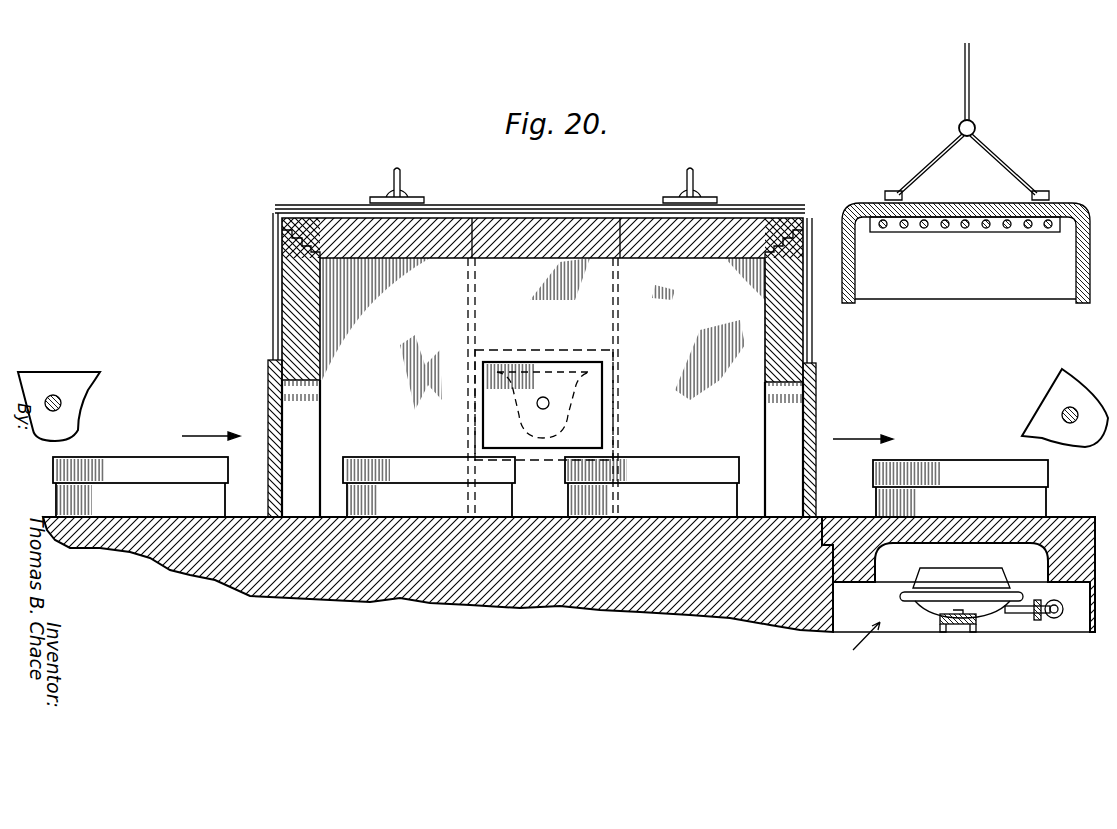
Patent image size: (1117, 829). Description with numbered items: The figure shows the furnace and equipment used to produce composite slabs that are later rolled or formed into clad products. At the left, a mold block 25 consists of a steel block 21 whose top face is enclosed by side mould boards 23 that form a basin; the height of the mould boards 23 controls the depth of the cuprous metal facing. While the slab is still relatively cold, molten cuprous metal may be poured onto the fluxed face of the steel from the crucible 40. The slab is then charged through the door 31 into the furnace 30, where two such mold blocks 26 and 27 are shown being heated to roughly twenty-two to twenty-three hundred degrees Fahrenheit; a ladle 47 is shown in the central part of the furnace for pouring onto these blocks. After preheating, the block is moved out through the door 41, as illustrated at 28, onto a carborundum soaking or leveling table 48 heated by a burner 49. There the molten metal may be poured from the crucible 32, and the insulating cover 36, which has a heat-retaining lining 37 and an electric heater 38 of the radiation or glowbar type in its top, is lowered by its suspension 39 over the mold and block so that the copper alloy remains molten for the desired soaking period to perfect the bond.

The block 21 is at (219, 498).
The mould boards 23 is at (228, 466).
The mould block 25 is at (158, 469).
The mould block 26 is at (412, 457).
The mould block 27 is at (677, 457).
The block outside the furnace 28 is at (970, 461).
The furnace 30 is at (323, 290).
The door 31 is at (268, 382).
The crucible 32 is at (1058, 389).
The insulating cover 36 is at (961, 173).
The heat-retaining lining 37 is at (856, 278).
The electric heater 38 is at (975, 229).
The suspension cable 39 is at (964, 82).
The crucible 40 is at (76, 380).
The door 41 is at (816, 394).
The ladle 47 is at (557, 382).
The heated table 48 is at (1066, 521).
The burner 49 is at (989, 610).